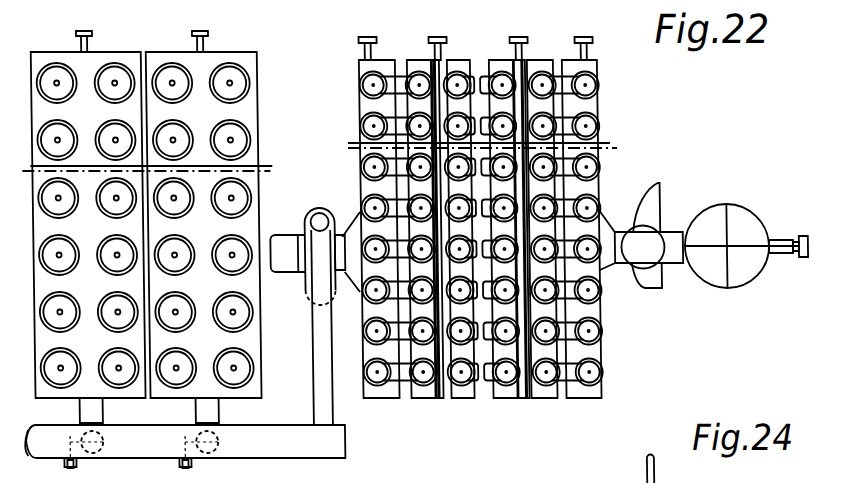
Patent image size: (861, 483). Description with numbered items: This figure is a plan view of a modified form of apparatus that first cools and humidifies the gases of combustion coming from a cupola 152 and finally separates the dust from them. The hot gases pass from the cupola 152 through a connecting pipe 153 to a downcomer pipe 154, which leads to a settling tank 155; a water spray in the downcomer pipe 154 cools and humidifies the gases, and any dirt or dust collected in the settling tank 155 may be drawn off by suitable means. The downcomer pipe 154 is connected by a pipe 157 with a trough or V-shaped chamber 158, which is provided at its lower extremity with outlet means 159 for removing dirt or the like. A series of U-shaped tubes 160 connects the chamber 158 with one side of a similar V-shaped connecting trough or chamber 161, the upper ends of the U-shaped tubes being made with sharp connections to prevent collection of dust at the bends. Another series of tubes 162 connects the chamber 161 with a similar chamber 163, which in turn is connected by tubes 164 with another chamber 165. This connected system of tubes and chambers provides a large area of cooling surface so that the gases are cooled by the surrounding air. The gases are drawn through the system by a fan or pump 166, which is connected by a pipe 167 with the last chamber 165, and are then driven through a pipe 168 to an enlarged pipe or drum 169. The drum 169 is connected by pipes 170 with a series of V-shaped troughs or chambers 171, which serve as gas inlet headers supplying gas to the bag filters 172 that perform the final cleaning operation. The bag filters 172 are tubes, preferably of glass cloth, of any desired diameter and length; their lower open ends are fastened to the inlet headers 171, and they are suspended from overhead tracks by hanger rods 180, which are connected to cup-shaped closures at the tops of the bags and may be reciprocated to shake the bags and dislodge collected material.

In FIG. 22, the cupola 152 is at (737, 205).
In FIG. 22, the connecting pipe 153 is at (670, 230).
In FIG. 22, the downcomer pipe 154 is at (641, 268).
In FIG. 22, the settling tank 155 is at (647, 195).
In FIG. 22, the pipe 157 is at (620, 232).
In FIG. 22, the trough or V-shaped chamber 158 is at (588, 352).
In FIG. 22, the outlet means 159 is at (591, 50).
In FIG. 22, the U-shaped tubes 160 is at (586, 300).
In FIG. 22, the V-shaped connecting trough or chamber 161 is at (542, 398).
In FIG. 22, the tubes 162 is at (487, 376).
In FIG. 22, the chamber 163 is at (453, 400).
In FIG. 22, the tubes 164 is at (372, 372).
In FIG. 22, the chamber 165 is at (377, 400).
In FIG. 22, the fan or pump 166 is at (301, 278).
In FIG. 22, the pipe 167 is at (352, 282).
In FIG. 22, the pipe 168 is at (308, 348).
In FIG. 22, the enlarged pipe or drum 169 is at (293, 456).
In FIG. 22, the pipes 170 is at (97, 412).
In FIG. 22, the V-shaped troughs or chambers (gas inlet headers) 171 is at (255, 340).
In FIG. 22, the bag filters 172 is at (246, 127).
In FIG. 24, the hanger rods 180 is at (640, 479).